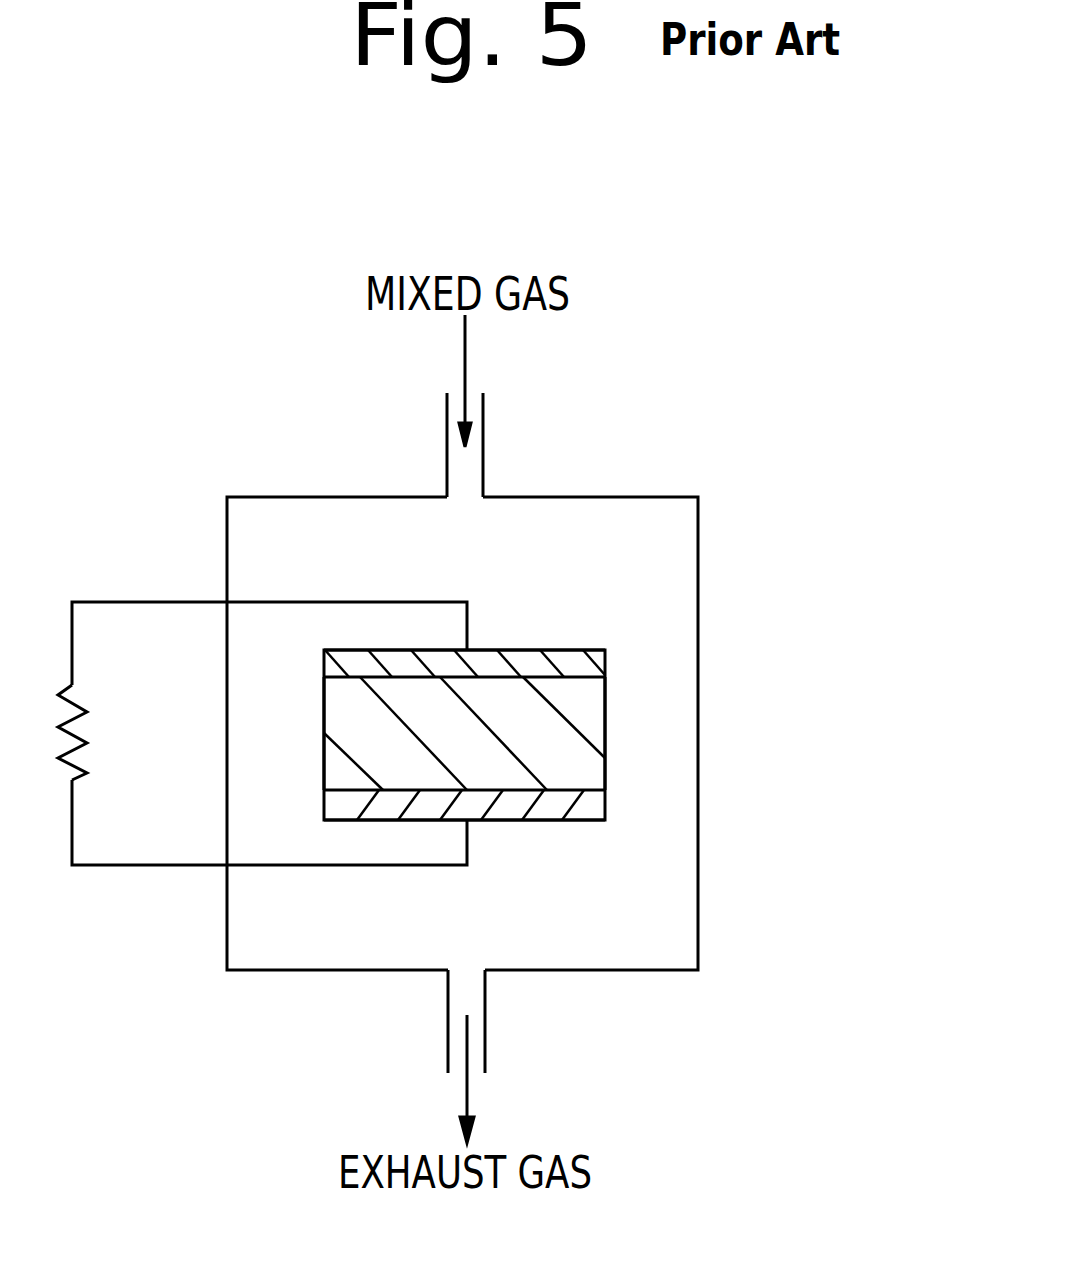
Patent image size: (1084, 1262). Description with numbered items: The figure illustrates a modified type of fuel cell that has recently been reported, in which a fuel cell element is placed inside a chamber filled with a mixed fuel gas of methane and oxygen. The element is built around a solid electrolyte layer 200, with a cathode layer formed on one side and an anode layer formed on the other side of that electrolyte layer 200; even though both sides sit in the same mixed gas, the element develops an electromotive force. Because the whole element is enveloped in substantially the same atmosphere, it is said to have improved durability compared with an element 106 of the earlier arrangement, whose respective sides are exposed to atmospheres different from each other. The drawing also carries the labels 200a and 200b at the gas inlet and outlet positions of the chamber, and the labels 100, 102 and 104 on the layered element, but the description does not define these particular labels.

The solid electrolyte layer 200 is at (647, 497).
The gas inlet 200a is at (447, 440).
The gas outlet 200b is at (448, 1038).
The element 106 is at (827, 617).
The first electrode 102 is at (592, 666).
The solid electrolyte body 100 is at (594, 740).
The second electrode 104 is at (592, 810).